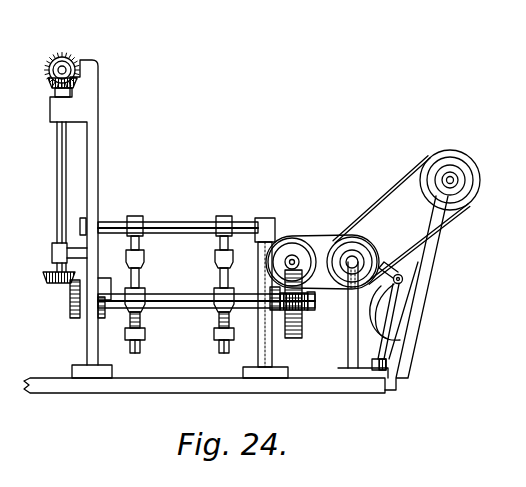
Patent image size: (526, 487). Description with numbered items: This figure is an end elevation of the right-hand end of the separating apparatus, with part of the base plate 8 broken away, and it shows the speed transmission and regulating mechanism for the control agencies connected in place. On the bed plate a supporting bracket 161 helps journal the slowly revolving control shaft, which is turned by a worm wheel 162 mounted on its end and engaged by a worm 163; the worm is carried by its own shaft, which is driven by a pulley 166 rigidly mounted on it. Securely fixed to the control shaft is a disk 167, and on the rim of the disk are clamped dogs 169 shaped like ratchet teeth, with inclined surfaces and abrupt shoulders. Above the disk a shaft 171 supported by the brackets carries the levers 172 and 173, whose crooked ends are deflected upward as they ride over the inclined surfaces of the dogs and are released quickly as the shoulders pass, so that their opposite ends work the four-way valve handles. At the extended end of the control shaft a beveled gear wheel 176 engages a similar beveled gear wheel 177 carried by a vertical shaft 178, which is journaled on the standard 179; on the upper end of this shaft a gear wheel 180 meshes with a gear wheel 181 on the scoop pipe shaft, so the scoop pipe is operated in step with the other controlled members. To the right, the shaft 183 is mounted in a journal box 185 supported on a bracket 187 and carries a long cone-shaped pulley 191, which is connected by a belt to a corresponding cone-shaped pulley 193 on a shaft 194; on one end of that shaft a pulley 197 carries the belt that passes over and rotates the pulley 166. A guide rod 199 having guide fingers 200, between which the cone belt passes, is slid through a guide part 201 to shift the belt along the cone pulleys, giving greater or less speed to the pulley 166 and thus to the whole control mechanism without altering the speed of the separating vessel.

The base plate 8 is at (97, 389).
The supporting bracket 161 is at (259, 350).
The worm wheel 162 is at (292, 335).
The worm 163 is at (303, 283).
The pulley 166 is at (282, 246).
The disk 167 is at (137, 278).
The dog 169 is at (212, 350).
The shaft 171 is at (166, 221).
The lever 172 is at (137, 214).
The lever 173 is at (228, 219).
The beveled gear wheel 176 is at (70, 311).
The beveled gear wheel 177 is at (46, 279).
The shaft 178 is at (58, 157).
The standard 179 is at (100, 107).
The gear wheel 180 is at (84, 86).
The gear wheel 181 is at (70, 54).
The shaft 183 is at (450, 181).
The journal box 185 is at (455, 179).
The bracket 187 is at (426, 298).
The cone-shaped pulley 191 is at (433, 164).
The cone-shaped pulley 193 is at (367, 239).
The shaft 194 is at (371, 262).
The pulley 197 is at (334, 242).
The guide rod 199 is at (401, 285).
The guide fingers 200 is at (402, 277).
The guide part 201 is at (388, 339).